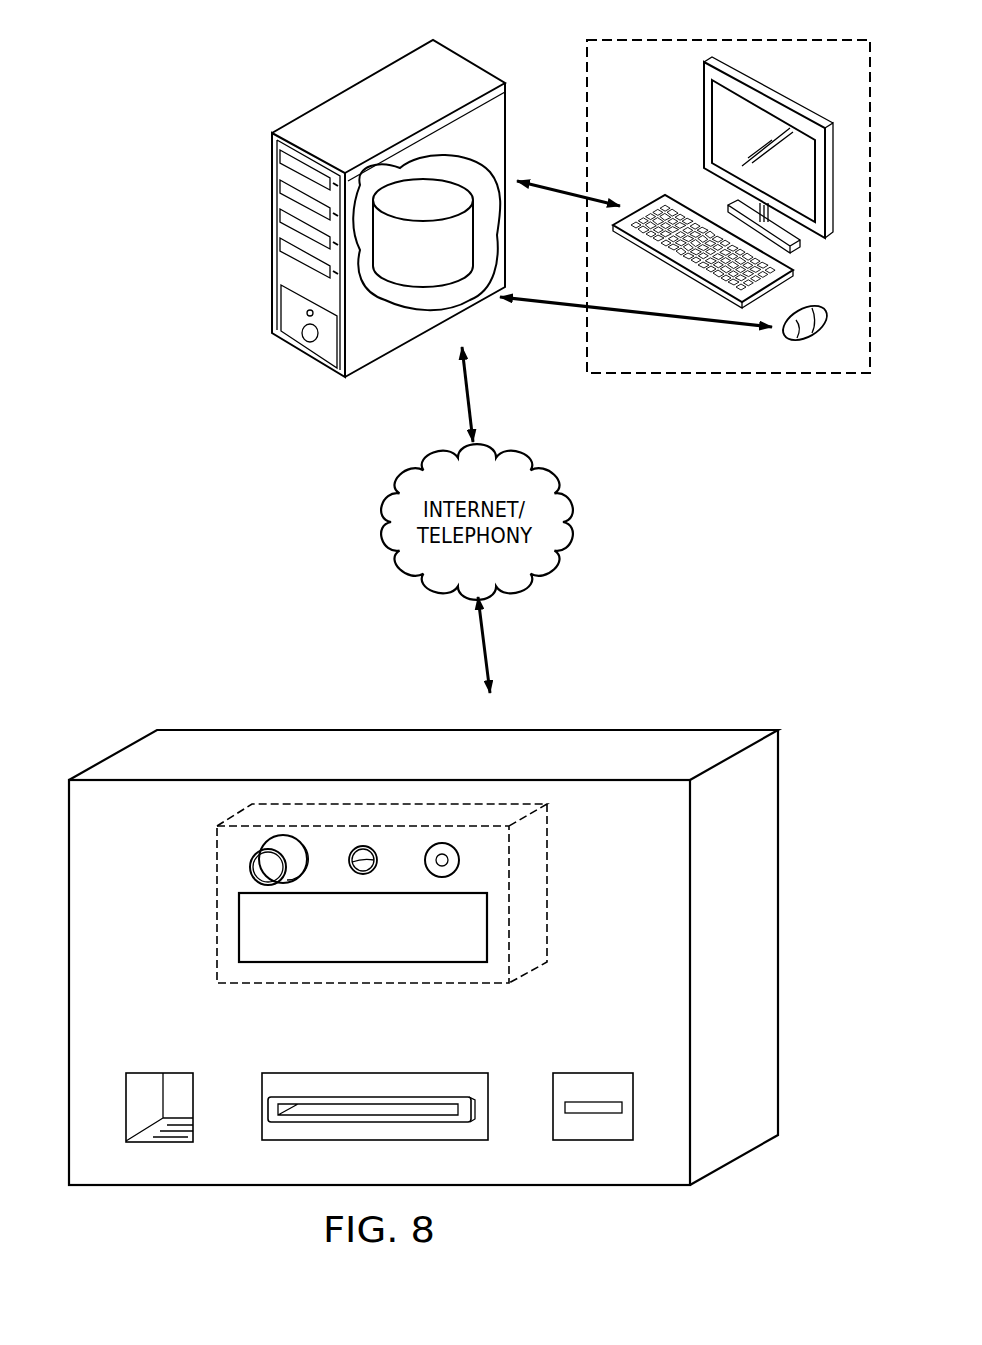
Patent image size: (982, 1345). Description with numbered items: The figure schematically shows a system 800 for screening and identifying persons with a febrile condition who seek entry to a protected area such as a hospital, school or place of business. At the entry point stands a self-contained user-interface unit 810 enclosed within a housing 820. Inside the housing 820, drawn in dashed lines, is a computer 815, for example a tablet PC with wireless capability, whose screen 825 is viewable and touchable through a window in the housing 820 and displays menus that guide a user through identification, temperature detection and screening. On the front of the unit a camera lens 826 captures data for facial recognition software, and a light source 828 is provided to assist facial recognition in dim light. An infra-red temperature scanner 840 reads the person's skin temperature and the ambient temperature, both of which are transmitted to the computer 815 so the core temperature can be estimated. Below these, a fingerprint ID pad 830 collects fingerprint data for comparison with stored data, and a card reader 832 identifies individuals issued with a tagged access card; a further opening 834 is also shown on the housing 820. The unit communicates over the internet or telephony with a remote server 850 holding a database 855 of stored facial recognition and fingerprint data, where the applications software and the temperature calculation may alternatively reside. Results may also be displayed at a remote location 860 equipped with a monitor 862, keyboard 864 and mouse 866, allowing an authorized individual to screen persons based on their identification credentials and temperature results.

The system 800 is at (170, 58).
The user-interface unit 810 is at (195, 715).
The computer 815 is at (547, 870).
The housing 820 is at (628, 729).
The screen 825 is at (384, 941).
The lens 826 is at (251, 868).
The light source 828 is at (363, 845).
The infra-red temperature scanner 840 is at (443, 843).
The fingerprint ID pad 830 is at (160, 1073).
The card reader 832 is at (372, 1073).
The printer slot 834 is at (594, 1073).
The server 850 is at (352, 85).
The database 855 is at (444, 265).
The remote location 860 is at (755, 380).
The monitor 862 is at (703, 118).
The keyboard 864 is at (652, 200).
The mouse 866 is at (814, 312).